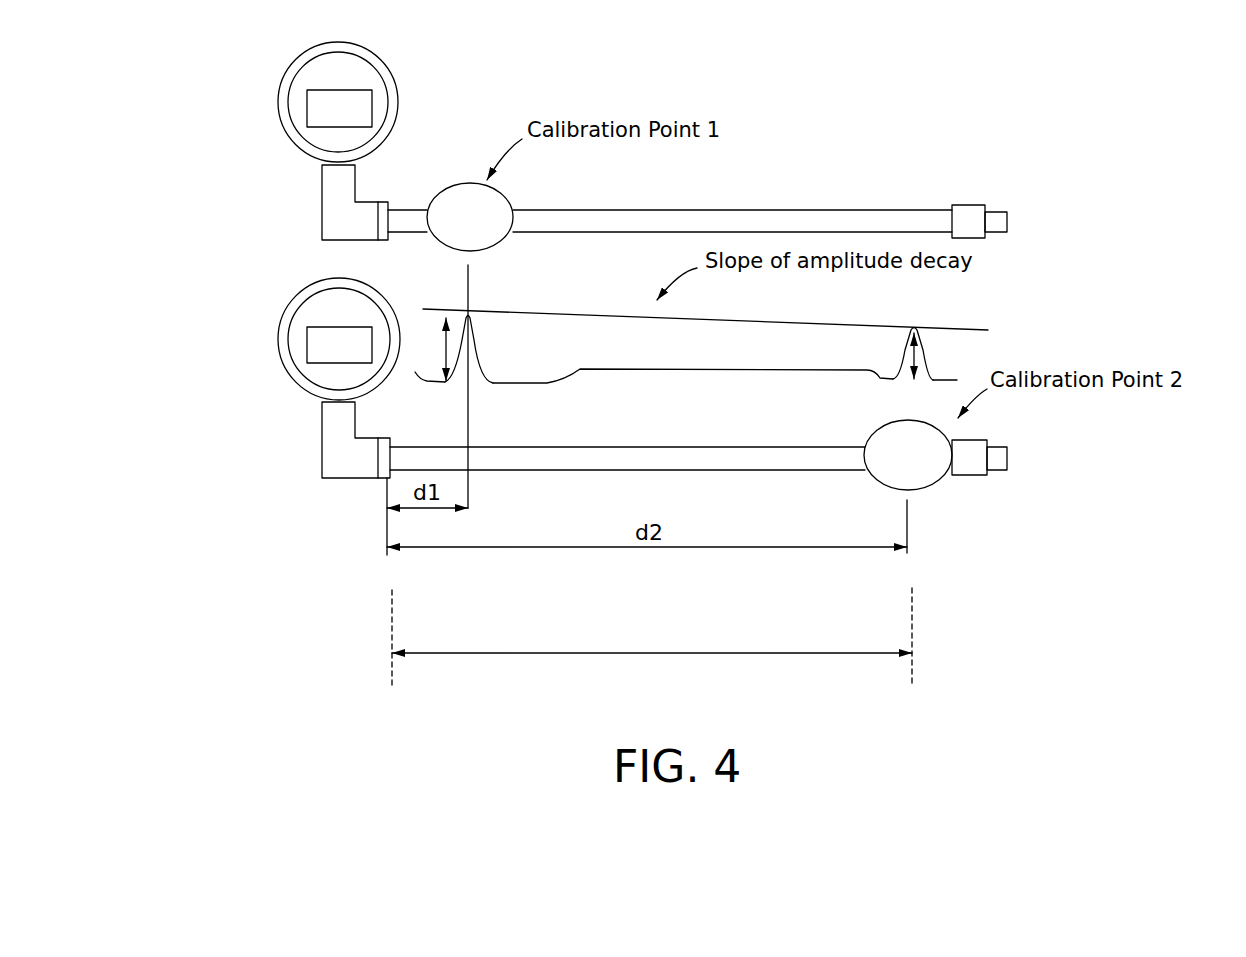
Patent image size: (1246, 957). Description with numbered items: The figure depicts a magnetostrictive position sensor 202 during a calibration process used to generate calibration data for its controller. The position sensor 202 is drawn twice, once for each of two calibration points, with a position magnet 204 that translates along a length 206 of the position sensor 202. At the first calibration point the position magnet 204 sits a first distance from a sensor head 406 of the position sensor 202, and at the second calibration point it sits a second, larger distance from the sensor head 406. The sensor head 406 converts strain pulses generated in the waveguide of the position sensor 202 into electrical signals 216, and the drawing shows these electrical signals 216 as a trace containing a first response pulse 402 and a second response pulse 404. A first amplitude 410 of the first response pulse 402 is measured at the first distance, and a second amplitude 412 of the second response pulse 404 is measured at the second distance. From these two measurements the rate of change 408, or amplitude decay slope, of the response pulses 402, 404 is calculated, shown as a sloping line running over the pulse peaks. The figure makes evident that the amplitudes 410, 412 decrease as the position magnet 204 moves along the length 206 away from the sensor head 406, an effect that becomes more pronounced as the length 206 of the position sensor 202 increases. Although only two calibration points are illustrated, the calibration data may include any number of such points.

The magnetostrictive position sensor 202 is at (265, 157).
The position magnet 204 is at (449, 229).
The length 206 is at (643, 652).
The electrical signals 216 is at (643, 372).
The first response pulse 402 is at (497, 350).
The second response pulse 404 is at (892, 355).
The sensor head 406 is at (343, 492).
The rate of change 408 is at (978, 329).
The first amplitude 410 is at (443, 350).
The second amplitude 412 is at (917, 350).